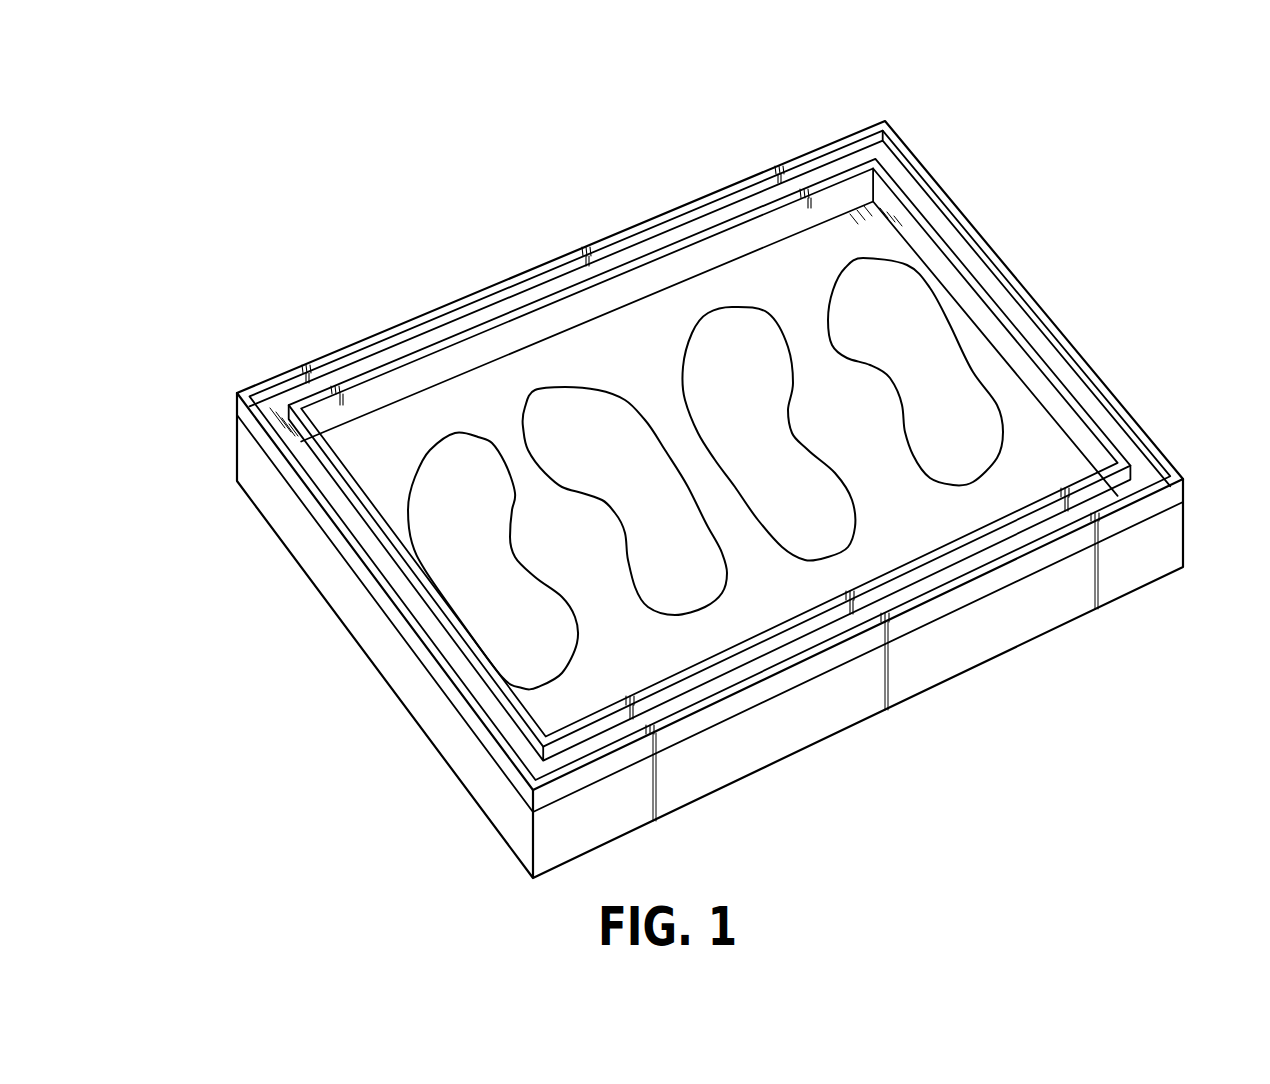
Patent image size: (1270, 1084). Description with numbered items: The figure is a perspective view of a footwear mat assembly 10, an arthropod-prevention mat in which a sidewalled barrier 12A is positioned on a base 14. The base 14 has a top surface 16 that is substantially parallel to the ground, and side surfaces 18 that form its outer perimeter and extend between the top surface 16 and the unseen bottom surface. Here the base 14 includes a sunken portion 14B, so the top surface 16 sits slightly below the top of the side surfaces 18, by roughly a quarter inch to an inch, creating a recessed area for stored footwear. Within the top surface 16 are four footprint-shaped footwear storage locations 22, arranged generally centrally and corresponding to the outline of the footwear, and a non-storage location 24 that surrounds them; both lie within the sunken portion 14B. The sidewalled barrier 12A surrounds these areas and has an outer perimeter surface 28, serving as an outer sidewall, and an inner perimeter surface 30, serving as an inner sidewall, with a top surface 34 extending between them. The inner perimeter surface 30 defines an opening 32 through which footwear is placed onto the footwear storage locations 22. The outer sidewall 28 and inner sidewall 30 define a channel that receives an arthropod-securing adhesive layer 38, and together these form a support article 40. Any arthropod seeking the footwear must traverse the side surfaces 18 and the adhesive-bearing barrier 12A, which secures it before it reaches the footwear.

The footwear mat assembly 10 is at (269, 131).
The sidewalled barrier 12A is at (938, 157).
The base 14 is at (889, 712).
The sunken portion 14B is at (848, 232).
The top surface 16 is at (425, 487).
The side surfaces 18 is at (1035, 625).
The footwear storage location 22 is at (475, 460).
The non-storage location 24 is at (865, 382).
The outer perimeter surface 28 is at (1030, 555).
The inner perimeter surface 30 is at (425, 368).
The opening 32 is at (1036, 410).
The top surface 34 is at (345, 345).
The arthropod-securing adhesive layer 38 is at (431, 600).
The support article 40 is at (277, 359).